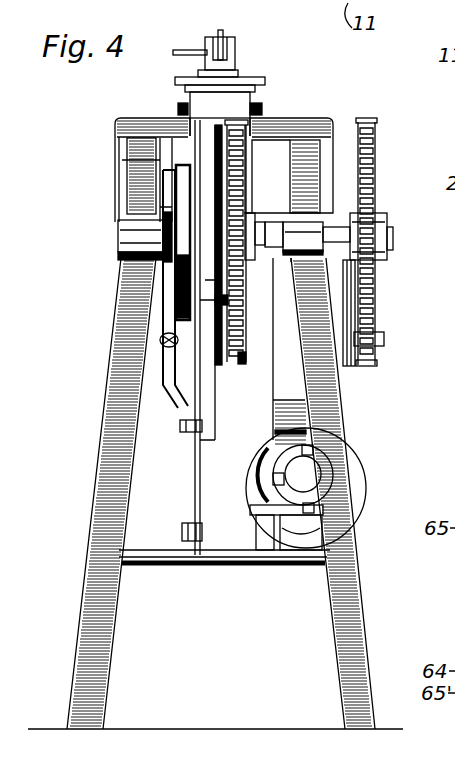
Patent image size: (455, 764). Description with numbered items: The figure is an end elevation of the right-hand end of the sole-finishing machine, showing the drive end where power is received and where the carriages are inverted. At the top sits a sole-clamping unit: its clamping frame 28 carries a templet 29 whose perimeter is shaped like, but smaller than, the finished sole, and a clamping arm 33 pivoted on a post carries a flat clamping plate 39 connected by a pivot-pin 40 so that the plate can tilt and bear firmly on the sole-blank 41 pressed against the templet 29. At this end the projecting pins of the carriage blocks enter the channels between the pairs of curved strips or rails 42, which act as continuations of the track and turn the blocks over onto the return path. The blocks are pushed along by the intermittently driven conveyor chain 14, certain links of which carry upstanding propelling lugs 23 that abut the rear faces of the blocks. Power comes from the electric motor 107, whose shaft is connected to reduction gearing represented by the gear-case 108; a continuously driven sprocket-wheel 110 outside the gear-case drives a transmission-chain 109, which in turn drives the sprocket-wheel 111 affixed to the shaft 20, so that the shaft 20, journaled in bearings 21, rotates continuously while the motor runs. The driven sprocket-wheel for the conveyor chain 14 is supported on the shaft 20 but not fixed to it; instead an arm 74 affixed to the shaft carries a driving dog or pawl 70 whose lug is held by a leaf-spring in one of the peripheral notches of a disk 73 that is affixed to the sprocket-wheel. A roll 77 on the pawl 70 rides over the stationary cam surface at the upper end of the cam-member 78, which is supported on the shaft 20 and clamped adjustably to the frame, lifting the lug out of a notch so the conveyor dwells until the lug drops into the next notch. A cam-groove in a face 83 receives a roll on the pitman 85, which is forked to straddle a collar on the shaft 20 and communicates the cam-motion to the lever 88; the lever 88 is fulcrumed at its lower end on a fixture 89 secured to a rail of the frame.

The conveyor chain 14 is at (228, 356).
The shaft 20 is at (392, 232).
The bearings 21 is at (135, 233).
The propelling lugs 23 is at (247, 355).
The clamping frame 28 is at (250, 98).
The templet 29 is at (176, 86).
The clamping arm 33 is at (223, 33).
The clamping plate 39 is at (240, 73).
The pivot-pin 40 is at (188, 50).
The sole-blank 41 is at (252, 86).
The curved strips or rails 42 is at (178, 108).
The driving dog or pawl 70 is at (220, 153).
The disk 73 is at (217, 287).
The arm 74 is at (205, 190).
The roll 77 is at (115, 124).
The cam-member 78 is at (118, 144).
The face 83 is at (118, 203).
The pitman 85 is at (163, 362).
The lever 88 is at (195, 470).
The fixture 89 is at (180, 530).
The electric motor 107 is at (360, 462).
The gear-case 108 is at (288, 398).
The transmission-chain 109 is at (380, 292).
The sprocket-wheel 110 is at (384, 342).
The sprocket-wheel 111 is at (375, 165).